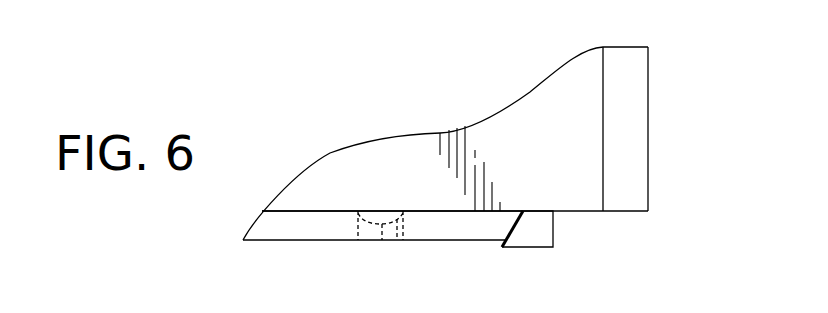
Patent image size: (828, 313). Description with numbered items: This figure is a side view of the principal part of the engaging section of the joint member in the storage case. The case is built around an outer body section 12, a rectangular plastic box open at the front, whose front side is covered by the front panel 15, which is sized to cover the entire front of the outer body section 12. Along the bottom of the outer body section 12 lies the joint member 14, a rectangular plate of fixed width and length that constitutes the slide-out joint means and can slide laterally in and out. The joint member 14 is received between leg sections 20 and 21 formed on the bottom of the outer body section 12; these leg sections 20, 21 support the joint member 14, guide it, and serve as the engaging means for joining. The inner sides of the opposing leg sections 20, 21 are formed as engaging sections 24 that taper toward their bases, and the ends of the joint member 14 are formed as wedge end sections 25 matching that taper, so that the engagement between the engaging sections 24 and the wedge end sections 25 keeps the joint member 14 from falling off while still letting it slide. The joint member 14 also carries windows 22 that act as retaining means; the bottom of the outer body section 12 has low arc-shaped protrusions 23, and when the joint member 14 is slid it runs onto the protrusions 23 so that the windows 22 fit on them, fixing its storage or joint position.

The outer body section 12 is at (493, 130).
The joint member 14 is at (302, 228).
The front panel 15 is at (633, 117).
The leg section 20 is at (591, 240).
The leg section 21 is at (543, 237).
The window 22 is at (397, 240).
The protrusion 23 is at (382, 240).
The engaging section 24 is at (501, 247).
The wedge end section 25 is at (510, 230).